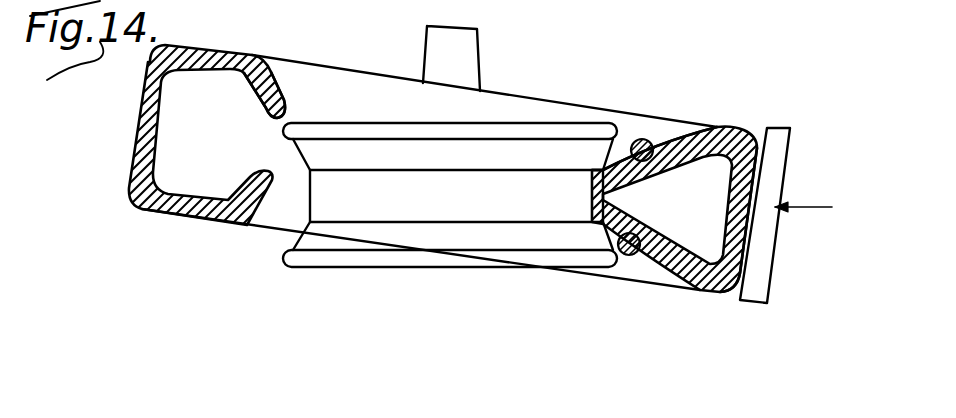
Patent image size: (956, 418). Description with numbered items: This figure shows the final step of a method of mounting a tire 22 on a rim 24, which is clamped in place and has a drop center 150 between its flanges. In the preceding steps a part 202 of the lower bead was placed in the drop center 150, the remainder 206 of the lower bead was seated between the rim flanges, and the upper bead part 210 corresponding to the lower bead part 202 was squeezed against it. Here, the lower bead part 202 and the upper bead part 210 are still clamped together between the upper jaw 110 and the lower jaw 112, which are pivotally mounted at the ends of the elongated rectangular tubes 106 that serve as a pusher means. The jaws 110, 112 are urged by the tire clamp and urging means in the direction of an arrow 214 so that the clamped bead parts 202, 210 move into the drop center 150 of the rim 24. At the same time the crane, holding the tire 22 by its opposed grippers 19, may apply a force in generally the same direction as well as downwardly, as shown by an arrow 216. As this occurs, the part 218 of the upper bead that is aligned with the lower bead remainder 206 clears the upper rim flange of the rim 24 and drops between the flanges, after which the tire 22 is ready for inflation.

The remainder of the lower bead 206 is at (273, 180).
The part of the upper bead 218 is at (287, 106).
The arrow 216 is at (332, 98).
The grippers 19 is at (473, 47).
The rim 24 is at (358, 257).
The drop center 150 is at (433, 211).
The part of the lower bead 202 is at (590, 202).
The upper bead part 210 is at (590, 172).
The tire 22 is at (735, 227).
The upper jaw 110 is at (644, 140).
The lower jaw 112 is at (631, 256).
The rectangular tubes 106 is at (789, 134).
The arrow 214 is at (808, 207).